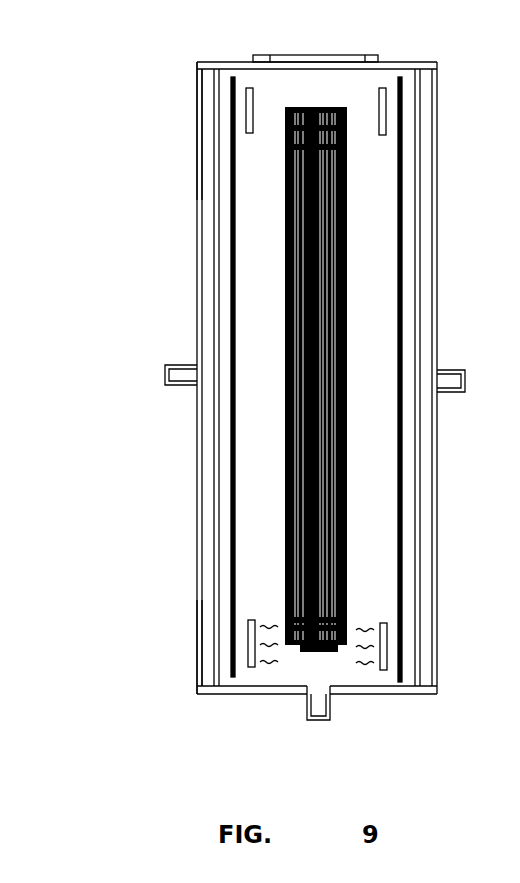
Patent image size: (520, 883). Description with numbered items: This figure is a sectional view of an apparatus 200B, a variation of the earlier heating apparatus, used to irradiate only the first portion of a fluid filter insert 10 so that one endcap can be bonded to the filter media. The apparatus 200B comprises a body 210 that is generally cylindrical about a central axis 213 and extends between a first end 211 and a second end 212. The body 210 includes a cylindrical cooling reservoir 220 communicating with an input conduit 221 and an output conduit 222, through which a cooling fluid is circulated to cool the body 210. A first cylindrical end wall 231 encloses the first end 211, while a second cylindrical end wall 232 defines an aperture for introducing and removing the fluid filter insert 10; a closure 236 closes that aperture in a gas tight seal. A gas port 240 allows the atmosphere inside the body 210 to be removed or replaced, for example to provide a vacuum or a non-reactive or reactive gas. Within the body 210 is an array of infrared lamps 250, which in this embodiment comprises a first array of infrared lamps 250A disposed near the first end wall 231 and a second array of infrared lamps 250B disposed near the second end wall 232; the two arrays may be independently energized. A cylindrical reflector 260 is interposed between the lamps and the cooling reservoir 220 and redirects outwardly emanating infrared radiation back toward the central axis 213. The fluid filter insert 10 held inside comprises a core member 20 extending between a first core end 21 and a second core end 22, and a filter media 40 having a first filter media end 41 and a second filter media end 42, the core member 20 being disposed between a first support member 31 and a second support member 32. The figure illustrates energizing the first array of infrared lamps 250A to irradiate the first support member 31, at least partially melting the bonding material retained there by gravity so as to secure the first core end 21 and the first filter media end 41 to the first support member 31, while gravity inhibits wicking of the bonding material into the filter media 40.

The apparatus 200B is at (365, 43).
The body 210 is at (196, 455).
The first end 211 is at (197, 645).
The second end 212 is at (196, 113).
The central axis 213 is at (300, 550).
The cooling reservoir 220 is at (212, 223).
The input conduit 221 is at (180, 375).
The output conduit 222 is at (445, 380).
The first cylindrical end wall 231 is at (252, 688).
The second cylindrical end wall 232 is at (232, 62).
The closure 236 is at (338, 57).
The gas port 240 is at (323, 708).
The array of infrared lamps 250 is at (247, 90).
The first array of infrared lamps 250A is at (250, 637).
The second array of infrared lamps 250B is at (244, 125).
The cylindrical reflector 260 is at (232, 310).
The fluid filter insert 10 is at (348, 232).
The core member 20 is at (348, 273).
The filter media 40 is at (348, 317).
The second support member 32 is at (348, 110).
The second core end 22 is at (348, 128).
The second filter media end 42 is at (348, 147).
The first filter media end 41 is at (348, 620).
The first core end 21 is at (348, 628).
The first support member 31 is at (348, 648).